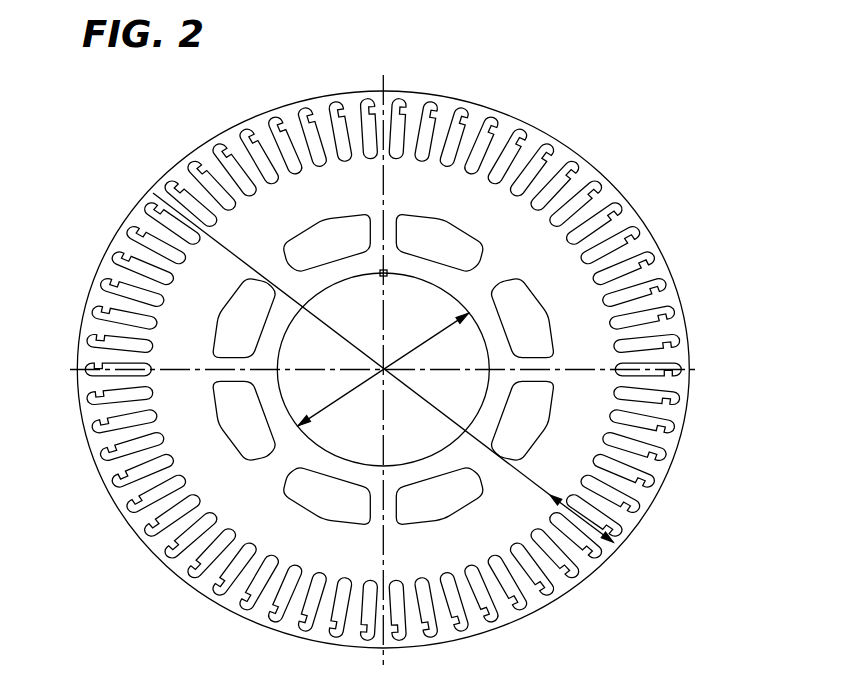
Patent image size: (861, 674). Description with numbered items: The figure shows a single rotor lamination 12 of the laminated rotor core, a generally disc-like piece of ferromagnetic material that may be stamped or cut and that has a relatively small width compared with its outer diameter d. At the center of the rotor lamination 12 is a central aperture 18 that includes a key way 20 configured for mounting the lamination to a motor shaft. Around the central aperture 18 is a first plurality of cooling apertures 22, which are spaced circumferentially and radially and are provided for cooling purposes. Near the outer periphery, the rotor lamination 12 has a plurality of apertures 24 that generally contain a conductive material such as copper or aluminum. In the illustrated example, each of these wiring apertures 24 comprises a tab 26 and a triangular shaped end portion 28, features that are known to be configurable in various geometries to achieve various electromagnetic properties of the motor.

The rotor lamination 12 is at (667, 477).
The central aperture 18 is at (402, 356).
The key way 20 is at (380, 276).
The cooling apertures 22 is at (240, 322).
The apertures 24 is at (592, 225).
The tab 26 is at (518, 133).
The triangular shaped end portion 28 is at (458, 107).
The outer diameter d is at (573, 495).